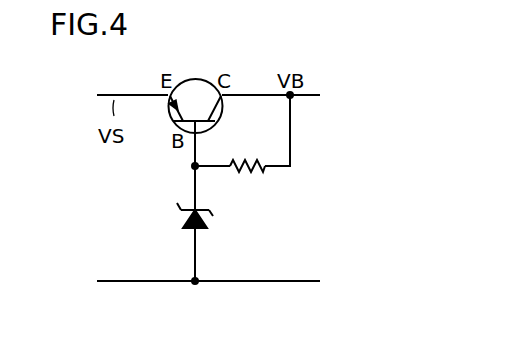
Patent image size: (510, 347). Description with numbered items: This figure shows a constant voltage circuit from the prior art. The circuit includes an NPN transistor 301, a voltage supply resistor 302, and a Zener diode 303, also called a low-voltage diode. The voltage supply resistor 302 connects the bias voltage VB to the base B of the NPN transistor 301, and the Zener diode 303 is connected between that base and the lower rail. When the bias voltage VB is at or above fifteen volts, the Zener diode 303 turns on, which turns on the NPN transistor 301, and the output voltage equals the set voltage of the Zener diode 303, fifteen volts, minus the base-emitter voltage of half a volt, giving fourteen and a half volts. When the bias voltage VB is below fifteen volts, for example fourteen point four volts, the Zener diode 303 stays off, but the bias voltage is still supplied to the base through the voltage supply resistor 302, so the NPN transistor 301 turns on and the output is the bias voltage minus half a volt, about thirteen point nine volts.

The NPN transistor 301 is at (195, 78).
The voltage supply resistor 302 is at (250, 172).
The Zener diode 303 is at (184, 218).